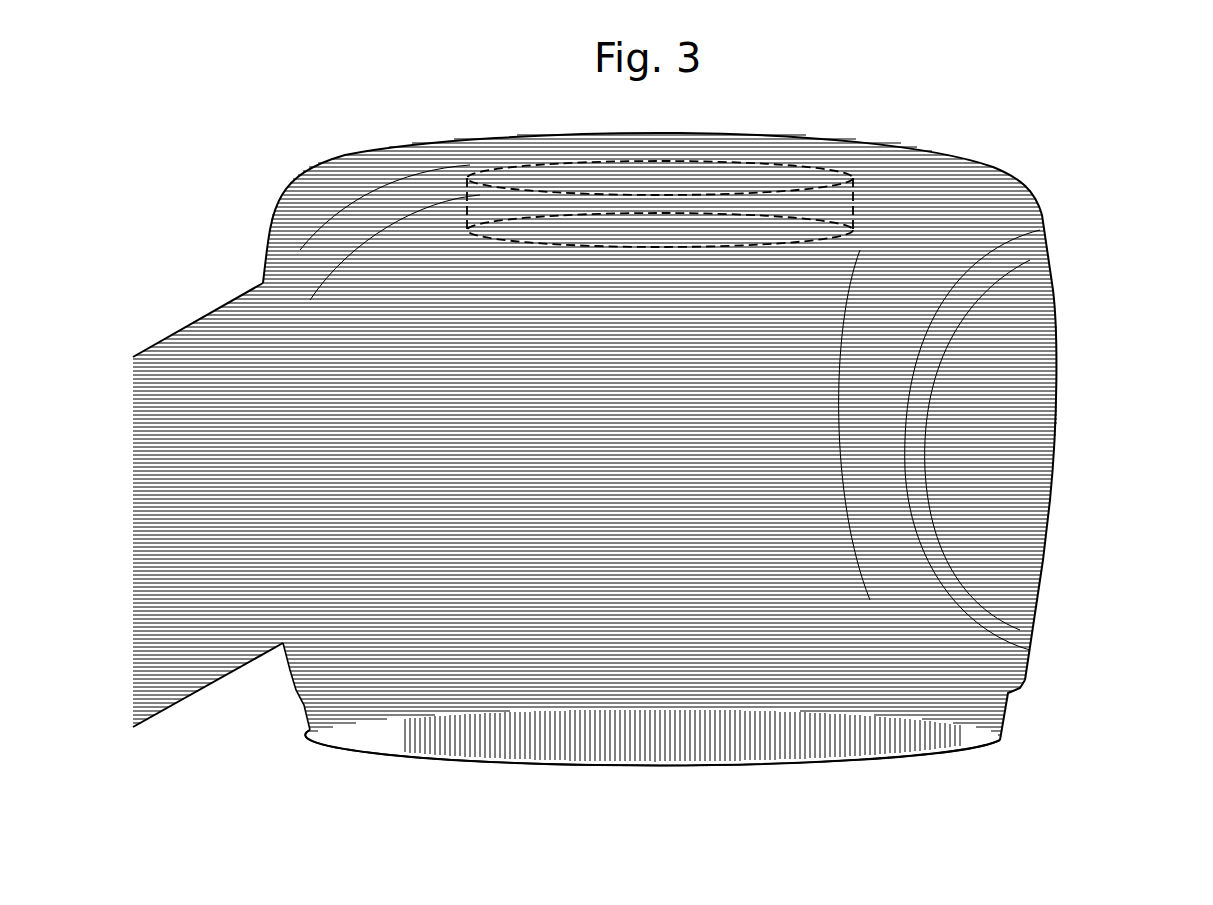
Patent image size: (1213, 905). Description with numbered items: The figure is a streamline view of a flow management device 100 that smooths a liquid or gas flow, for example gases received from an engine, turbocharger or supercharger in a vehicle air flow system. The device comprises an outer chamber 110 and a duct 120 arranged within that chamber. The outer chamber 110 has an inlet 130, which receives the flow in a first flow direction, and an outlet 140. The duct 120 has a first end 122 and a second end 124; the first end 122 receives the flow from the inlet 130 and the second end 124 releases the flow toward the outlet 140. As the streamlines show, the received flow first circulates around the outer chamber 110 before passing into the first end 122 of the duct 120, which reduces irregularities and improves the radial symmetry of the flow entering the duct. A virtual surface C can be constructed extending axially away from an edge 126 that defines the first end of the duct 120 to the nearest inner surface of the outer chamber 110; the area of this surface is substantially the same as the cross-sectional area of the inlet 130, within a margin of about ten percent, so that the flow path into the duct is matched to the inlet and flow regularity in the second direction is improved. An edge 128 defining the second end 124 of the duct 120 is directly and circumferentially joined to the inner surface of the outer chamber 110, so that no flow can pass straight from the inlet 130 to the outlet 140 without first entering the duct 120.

The flow management device 100 is at (1082, 197).
The outer chamber 110 is at (1057, 350).
The duct 120 is at (823, 418).
The first end 122 is at (853, 228).
The second end 124 is at (1005, 692).
The edge 126 is at (466, 232).
The edge 128 is at (437, 735).
The inlet 130 is at (193, 320).
The outlet 140 is at (310, 727).
The virtual surface C is at (467, 190).